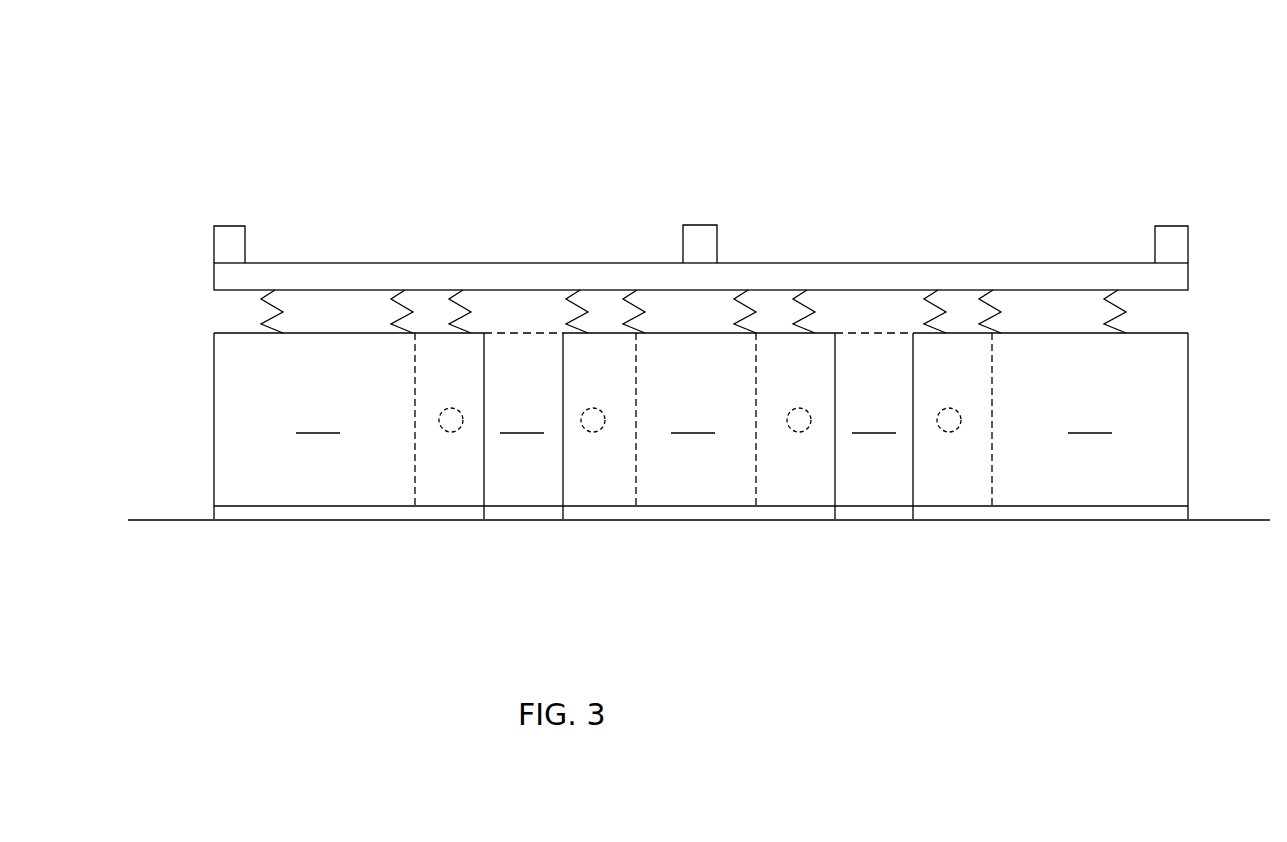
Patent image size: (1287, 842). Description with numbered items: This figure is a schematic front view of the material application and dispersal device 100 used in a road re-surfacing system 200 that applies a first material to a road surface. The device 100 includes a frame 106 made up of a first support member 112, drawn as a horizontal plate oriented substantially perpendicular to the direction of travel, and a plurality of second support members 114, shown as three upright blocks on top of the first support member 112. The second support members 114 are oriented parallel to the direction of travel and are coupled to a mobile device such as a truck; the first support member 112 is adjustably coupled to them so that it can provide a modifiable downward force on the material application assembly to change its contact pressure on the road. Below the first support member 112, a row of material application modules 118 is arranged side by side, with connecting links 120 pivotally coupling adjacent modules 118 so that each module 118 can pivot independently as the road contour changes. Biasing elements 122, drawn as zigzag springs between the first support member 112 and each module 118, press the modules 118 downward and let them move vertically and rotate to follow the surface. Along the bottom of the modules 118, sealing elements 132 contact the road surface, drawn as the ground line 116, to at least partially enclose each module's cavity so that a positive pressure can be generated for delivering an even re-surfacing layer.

The re-surfacing system 200 is at (232, 124).
The material application and dispersal device 100 is at (1070, 180).
The frame 106 is at (188, 263).
The first support member 112 is at (365, 263).
The second support members 114 is at (228, 225).
The biasing elements 122 is at (277, 311).
The material application modules 118 is at (701, 426).
The connecting links 120 is at (709, 504).
The sealing element 132 is at (701, 539).
The support surface 116 is at (160, 518).